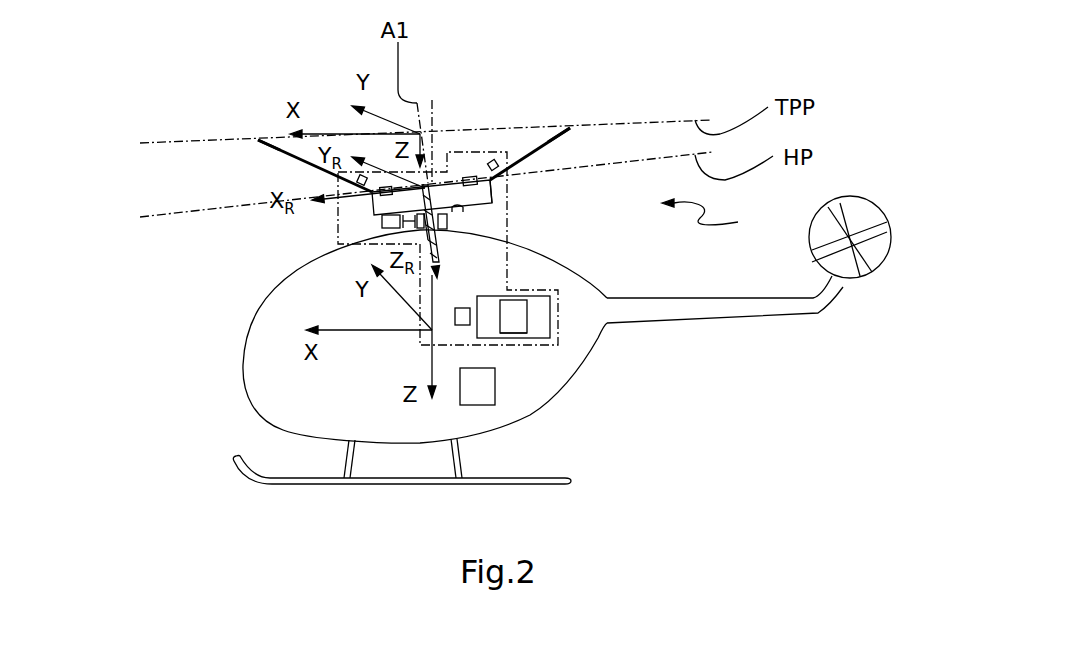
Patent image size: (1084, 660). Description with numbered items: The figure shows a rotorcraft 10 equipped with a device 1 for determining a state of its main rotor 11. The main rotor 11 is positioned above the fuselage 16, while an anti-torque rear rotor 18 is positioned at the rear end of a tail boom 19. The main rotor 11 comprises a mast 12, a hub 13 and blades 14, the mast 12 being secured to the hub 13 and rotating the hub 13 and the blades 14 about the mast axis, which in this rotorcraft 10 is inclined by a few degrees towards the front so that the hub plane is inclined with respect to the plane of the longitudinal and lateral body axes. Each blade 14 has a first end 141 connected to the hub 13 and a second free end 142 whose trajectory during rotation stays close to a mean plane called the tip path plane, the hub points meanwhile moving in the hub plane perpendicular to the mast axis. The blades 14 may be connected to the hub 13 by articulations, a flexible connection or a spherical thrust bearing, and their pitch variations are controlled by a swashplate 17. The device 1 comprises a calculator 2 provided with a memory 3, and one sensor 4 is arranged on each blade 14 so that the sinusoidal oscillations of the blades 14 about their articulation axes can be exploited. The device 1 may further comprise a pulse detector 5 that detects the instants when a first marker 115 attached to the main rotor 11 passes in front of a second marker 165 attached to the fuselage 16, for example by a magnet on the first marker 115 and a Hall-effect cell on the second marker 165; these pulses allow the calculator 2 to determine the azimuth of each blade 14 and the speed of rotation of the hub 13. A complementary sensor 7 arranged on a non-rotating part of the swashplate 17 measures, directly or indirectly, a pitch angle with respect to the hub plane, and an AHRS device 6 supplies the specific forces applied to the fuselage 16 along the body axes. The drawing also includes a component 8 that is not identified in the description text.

The device for determining a state of the main rotor 1 is at (558, 312).
The calculator 2 is at (535, 337).
The memory 3 is at (513, 316).
The sensor 4 is at (373, 192).
The pulse detector 5 is at (457, 212).
The AHRS device 6 is at (477, 386).
The complementary sensor 7 is at (286, 246).
The inertial measurement unit 8 is at (463, 327).
The rotorcraft 10 is at (136, 411).
The main rotor 11 is at (714, 216).
The mast 12 is at (440, 228).
The hub 13 is at (450, 180).
The blade 14 is at (282, 151).
The fuselage 16 is at (560, 387).
The swashplate 17 is at (492, 190).
The anti-torque rear rotor 18 is at (890, 247).
The tail boom 19 is at (747, 318).
The first marker 115 is at (417, 238).
The first end of the blade 141 is at (377, 173).
The second free end of the blade 142 is at (277, 152).
The second marker 165 is at (382, 225).